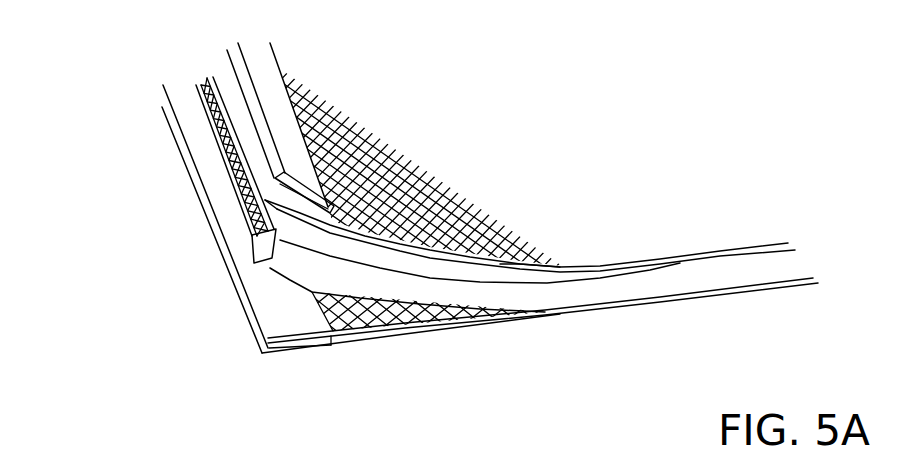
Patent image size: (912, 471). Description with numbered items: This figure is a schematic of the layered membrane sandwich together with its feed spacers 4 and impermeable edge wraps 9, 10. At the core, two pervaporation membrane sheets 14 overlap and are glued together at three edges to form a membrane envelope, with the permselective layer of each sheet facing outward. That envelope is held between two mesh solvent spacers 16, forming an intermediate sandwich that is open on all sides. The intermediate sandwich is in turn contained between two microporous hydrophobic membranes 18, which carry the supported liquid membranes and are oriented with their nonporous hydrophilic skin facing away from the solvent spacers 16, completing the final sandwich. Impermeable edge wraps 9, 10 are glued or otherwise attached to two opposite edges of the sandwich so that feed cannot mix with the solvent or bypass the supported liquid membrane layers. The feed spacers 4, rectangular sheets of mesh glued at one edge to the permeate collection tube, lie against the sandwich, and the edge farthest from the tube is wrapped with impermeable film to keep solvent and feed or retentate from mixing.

The feed spacer 4 is at (528, 347).
The impermeable edge wrap 9 is at (530, 274).
The impermeable edge wrap 10 is at (359, 235).
The pervaporation membrane sheet 14 is at (181, 305).
The mesh solvent spacer 16 is at (417, 216).
The microporous hydrophobic membrane 18 is at (164, 190).